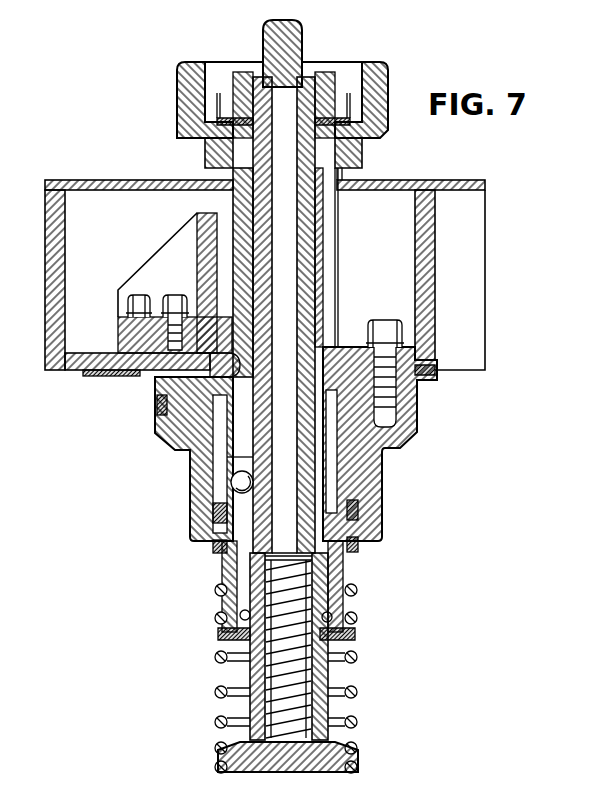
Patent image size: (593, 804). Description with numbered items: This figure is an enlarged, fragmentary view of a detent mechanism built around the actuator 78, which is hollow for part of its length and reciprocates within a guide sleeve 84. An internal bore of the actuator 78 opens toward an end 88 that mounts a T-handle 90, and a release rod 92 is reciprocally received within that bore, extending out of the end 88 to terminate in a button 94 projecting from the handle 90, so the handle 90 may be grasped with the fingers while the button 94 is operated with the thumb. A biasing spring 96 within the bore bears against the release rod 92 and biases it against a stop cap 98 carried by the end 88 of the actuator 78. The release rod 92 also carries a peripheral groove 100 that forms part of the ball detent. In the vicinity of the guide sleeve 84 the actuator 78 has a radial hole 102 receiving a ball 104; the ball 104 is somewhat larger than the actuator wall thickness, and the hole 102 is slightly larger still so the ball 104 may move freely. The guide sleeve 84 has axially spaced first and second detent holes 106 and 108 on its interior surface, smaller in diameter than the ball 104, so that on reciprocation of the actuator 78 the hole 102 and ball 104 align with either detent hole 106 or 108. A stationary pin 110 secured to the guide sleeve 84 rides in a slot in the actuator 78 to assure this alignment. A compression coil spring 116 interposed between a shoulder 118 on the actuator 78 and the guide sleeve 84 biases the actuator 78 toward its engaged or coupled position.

The actuator 78 is at (337, 748).
The guide sleeve 84 is at (155, 397).
The end of the actuator 88 is at (208, 157).
The T-handle 90 is at (190, 78).
The release rod 92 is at (316, 301).
The button 94 is at (263, 36).
The biasing spring 96 is at (260, 690).
The stop cap 98 is at (323, 72).
The peripheral groove 100 is at (290, 458).
The radial hole 102 is at (232, 488).
The ball 104 is at (228, 458).
The first detent hole 106 is at (155, 386).
The second detent hole 108 is at (197, 515).
The stationary pin 110 is at (347, 347).
The compression coil spring 116 is at (355, 698).
The shoulder 118 is at (342, 771).